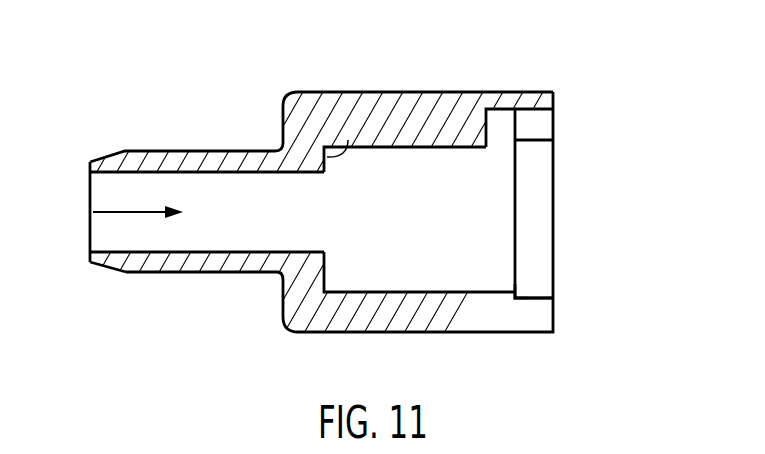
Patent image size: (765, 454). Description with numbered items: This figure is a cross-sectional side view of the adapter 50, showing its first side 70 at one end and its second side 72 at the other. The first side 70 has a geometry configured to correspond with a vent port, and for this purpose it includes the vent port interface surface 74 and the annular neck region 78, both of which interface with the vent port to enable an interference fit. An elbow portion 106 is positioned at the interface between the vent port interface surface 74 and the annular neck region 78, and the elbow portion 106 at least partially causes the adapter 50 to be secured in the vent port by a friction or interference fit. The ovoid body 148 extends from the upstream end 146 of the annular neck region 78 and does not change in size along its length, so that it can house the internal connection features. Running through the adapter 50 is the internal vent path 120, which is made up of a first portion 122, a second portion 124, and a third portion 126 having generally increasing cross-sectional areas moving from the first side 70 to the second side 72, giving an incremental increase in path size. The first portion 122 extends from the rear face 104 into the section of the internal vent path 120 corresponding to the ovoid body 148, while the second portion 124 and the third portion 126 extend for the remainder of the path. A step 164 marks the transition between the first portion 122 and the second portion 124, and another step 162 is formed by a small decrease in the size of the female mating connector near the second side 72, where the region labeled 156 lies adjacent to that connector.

The adapter 50 is at (403, 44).
The first side 70 is at (106, 140).
The second side 72 is at (582, 94).
The vent port interface surface 74 is at (110, 269).
The annular neck region 78 is at (150, 150).
The rear face 104 is at (88, 258).
The elbow portion 106 is at (127, 274).
The internal vent path 120 is at (108, 211).
The first portion 122 is at (215, 238).
The second portion 124 is at (440, 270).
The third portion 126 is at (538, 293).
The upstream end 146 is at (278, 147).
The ovoid body 148 is at (407, 91).
The groove 156 is at (545, 123).
The step 162 is at (517, 294).
The step 164 is at (348, 140).